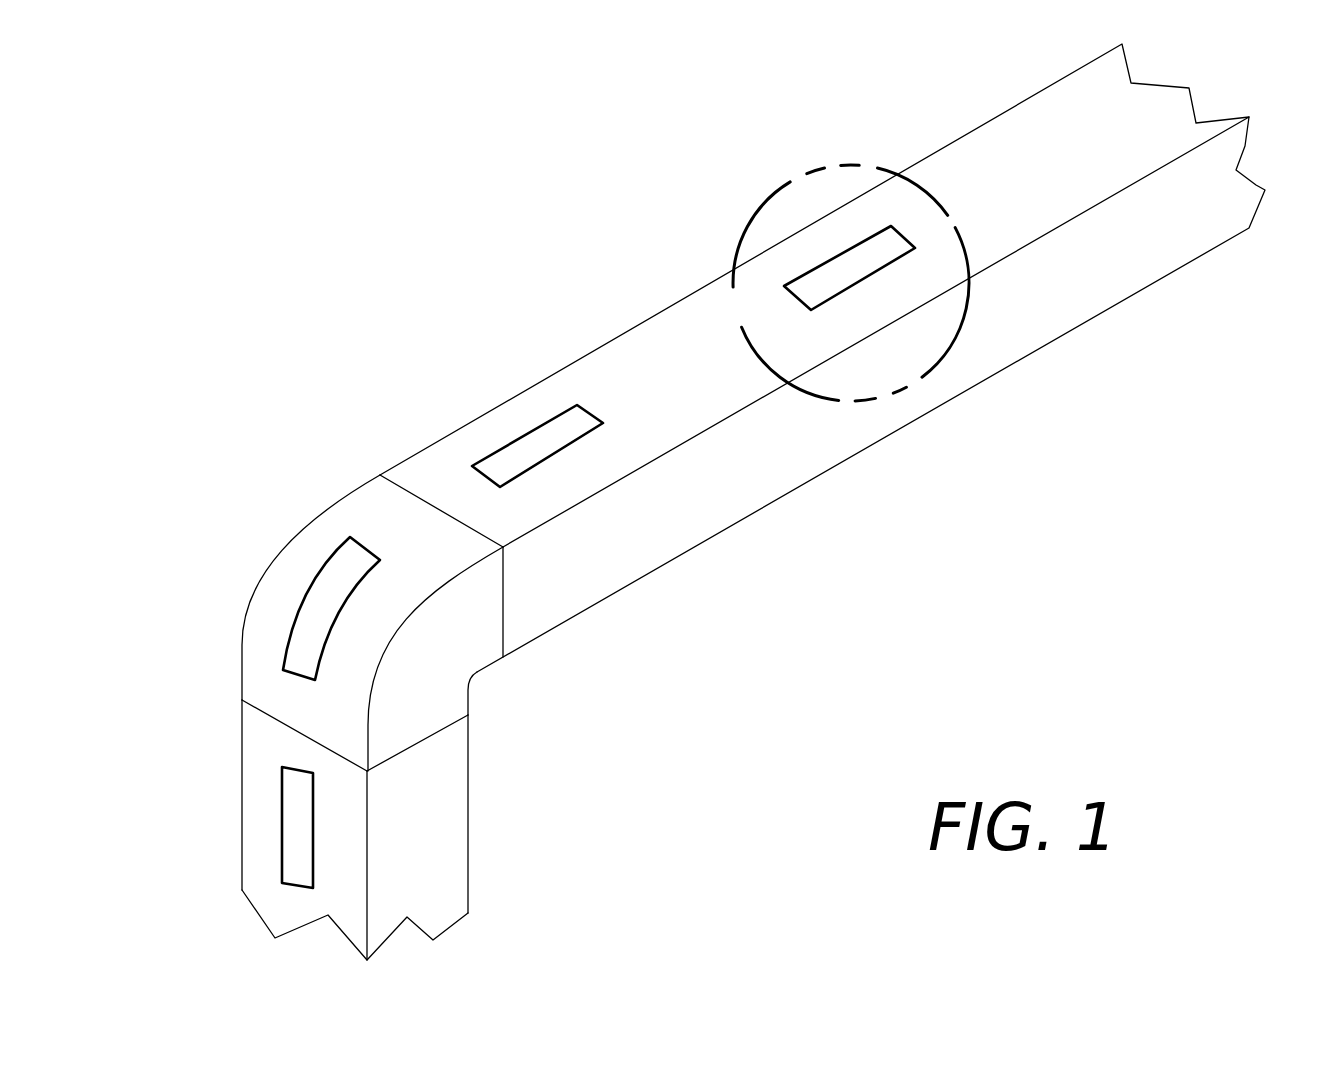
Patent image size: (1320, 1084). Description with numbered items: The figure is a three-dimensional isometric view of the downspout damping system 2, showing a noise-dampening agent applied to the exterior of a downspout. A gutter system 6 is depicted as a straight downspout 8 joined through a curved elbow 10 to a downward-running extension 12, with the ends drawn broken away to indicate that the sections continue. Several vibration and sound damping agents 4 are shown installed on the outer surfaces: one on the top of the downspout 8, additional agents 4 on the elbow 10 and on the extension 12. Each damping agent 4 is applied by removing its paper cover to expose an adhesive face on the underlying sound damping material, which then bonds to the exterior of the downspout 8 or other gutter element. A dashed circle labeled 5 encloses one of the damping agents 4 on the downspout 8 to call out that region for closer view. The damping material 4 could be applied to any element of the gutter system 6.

The downspout damping system 2 is at (200, 161).
The vibration and sound damping agent 4 is at (498, 435).
The detail region 5 is at (742, 327).
The gutter system 6 is at (550, 299).
The downspout 8 is at (710, 505).
The elbow 10 is at (450, 677).
The extension 12 is at (450, 832).